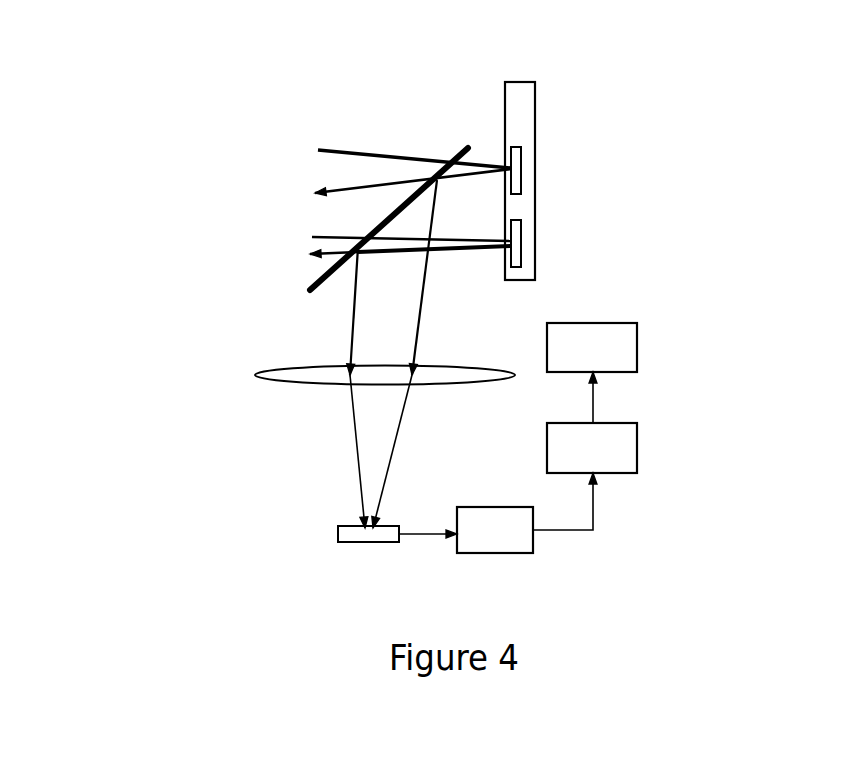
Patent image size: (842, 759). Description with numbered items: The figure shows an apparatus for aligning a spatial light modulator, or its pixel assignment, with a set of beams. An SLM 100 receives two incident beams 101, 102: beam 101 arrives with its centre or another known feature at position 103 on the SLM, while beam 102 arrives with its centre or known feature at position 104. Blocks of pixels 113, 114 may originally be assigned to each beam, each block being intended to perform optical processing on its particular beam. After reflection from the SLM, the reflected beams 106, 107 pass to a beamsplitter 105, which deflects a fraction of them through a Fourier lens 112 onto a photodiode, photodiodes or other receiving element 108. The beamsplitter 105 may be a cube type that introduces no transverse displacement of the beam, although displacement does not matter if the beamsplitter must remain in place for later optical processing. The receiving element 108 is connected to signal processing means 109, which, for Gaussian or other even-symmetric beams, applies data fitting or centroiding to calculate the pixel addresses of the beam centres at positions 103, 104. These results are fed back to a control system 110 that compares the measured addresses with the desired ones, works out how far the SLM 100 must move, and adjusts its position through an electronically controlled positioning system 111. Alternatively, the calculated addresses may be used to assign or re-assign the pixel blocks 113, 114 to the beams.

The SLM 100 is at (512, 105).
The incident beam 101 is at (372, 150).
The incident beam 102 is at (320, 233).
The position 103 is at (515, 168).
The position 104 is at (515, 242).
The beamsplitter 105 is at (308, 282).
The reflected beam 106 is at (342, 350).
The reflected beam 107 is at (422, 328).
The receiving element 108 is at (337, 536).
The signal processing means 109 is at (502, 520).
The control system 110 is at (622, 440).
The electronically controlled positioning system 111 is at (622, 337).
The Fourier lens 112 is at (280, 385).
The pixel block 113 is at (516, 182).
The pixel block 114 is at (516, 251).